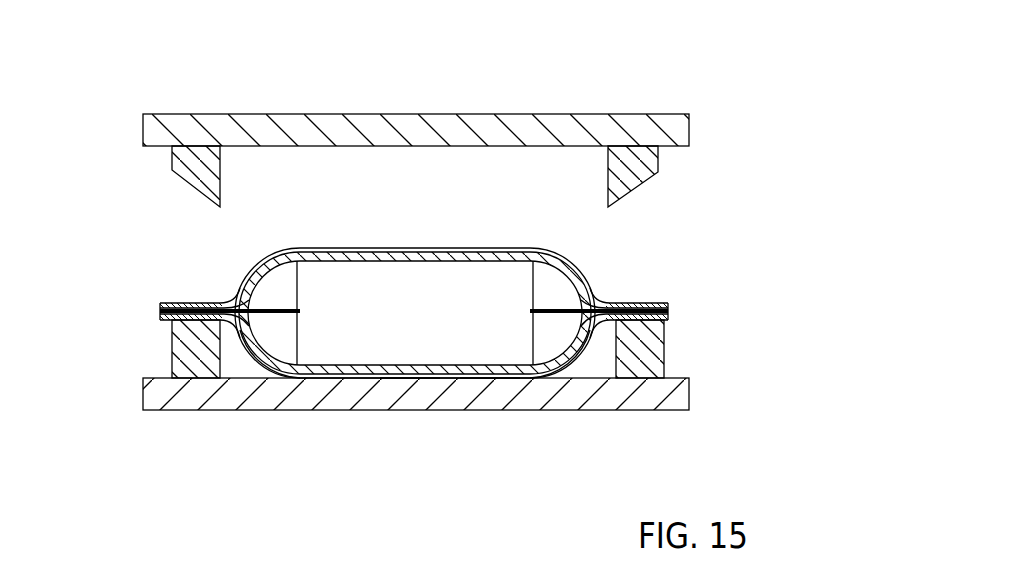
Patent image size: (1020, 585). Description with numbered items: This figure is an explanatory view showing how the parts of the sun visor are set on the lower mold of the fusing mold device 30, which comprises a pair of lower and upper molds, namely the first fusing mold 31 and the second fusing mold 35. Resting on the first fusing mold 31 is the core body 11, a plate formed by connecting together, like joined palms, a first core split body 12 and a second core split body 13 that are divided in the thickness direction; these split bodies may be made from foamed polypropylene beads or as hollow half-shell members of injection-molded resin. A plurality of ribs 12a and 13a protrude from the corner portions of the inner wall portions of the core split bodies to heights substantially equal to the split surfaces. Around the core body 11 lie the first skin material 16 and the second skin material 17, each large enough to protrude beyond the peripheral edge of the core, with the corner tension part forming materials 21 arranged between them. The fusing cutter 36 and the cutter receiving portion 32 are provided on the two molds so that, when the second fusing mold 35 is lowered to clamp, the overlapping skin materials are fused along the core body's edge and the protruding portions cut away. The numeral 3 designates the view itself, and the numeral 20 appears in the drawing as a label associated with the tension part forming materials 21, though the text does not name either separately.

The mold 3 is at (424, 125).
The fusing mold device 30 is at (438, 125).
The second fusing mold 35 is at (360, 122).
The fusing cutter 36 is at (630, 185).
The first fusing mold 31 is at (195, 400).
The cutter receiving portion 32 is at (193, 333).
The plates 20 is at (417, 274).
The corner tension part forming material 21 is at (185, 305).
The core body 11 is at (414, 331).
The first core split body 12 is at (333, 375).
The rib 12a is at (267, 380).
The second core split body 13 is at (398, 378).
The rib 13a is at (280, 290).
The first skin material 16 is at (487, 373).
The second skin material 17 is at (403, 387).